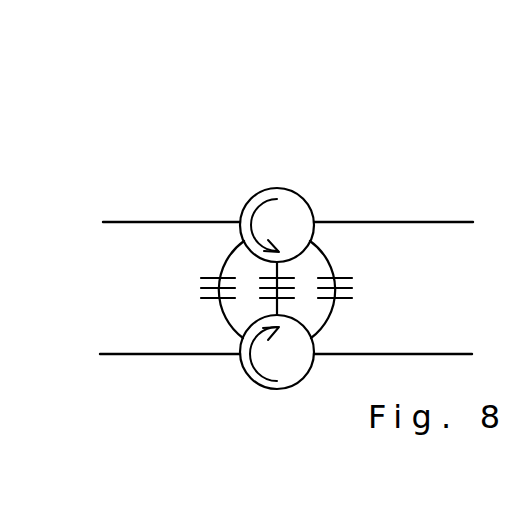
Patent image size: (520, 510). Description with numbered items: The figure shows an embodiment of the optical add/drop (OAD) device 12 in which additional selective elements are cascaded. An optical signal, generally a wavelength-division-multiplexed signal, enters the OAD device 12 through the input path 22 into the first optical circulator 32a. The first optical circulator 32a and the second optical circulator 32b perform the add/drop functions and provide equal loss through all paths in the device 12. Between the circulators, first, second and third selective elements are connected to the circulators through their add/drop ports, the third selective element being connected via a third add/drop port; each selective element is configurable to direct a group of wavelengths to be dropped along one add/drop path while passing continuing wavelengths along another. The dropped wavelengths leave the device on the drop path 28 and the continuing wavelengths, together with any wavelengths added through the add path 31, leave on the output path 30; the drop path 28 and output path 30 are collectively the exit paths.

The OAD device 12 is at (178, 115).
The input path 22 is at (153, 220).
The drop path 28 is at (368, 220).
The output path 30 is at (442, 352).
The add port 31 is at (145, 358).
The first optical circulator 32a is at (280, 188).
The second optical circulator 32b is at (275, 390).